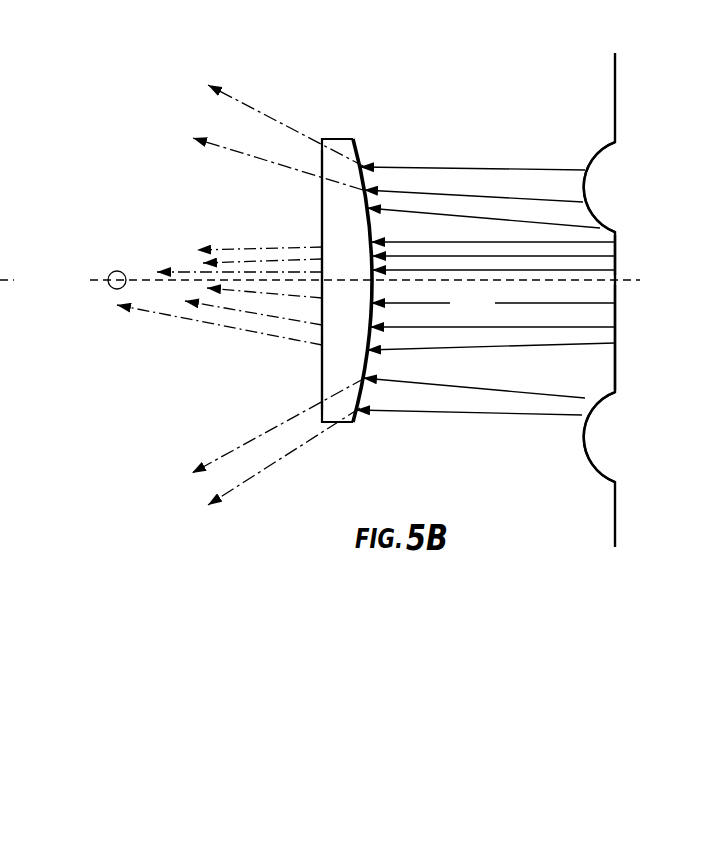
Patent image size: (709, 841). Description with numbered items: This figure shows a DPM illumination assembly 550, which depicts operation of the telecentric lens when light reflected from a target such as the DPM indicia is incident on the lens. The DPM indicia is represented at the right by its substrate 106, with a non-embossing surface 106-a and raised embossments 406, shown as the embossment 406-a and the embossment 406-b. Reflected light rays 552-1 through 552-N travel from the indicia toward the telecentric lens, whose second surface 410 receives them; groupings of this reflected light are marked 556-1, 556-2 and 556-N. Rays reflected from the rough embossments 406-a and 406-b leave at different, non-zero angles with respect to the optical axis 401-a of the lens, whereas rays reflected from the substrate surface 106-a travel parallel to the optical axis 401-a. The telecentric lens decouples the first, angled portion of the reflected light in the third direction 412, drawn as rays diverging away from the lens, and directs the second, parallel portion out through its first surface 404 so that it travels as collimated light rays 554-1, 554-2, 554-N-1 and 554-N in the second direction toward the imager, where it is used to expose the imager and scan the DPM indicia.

The DPM illumination assembly 550 is at (170, 88).
The third direction 412 is at (267, 110).
The second surface 410 is at (345, 139).
The lens input surface 406 is at (322, 207).
The first light region 556-1 is at (530, 97).
The second light region 556-2 is at (530, 134).
The substrate 106 is at (640, 130).
The embossment 406-a is at (588, 183).
The reflected light ray 552-1 is at (480, 197).
The optical axis 401-a is at (620, 258).
The collimated light ray 554-1 is at (245, 245).
The collimated light ray 554-2 is at (203, 263).
The first surface 404 is at (490, 322).
The surface of the substrate 106-a is at (620, 348).
The collimated light ray 554-N is at (188, 318).
The reflected light ray 552-N is at (592, 379).
The collimated light ray 554-N-1 is at (307, 322).
The embossment 406-b is at (585, 435).
The Nth light region 556-N is at (562, 512).